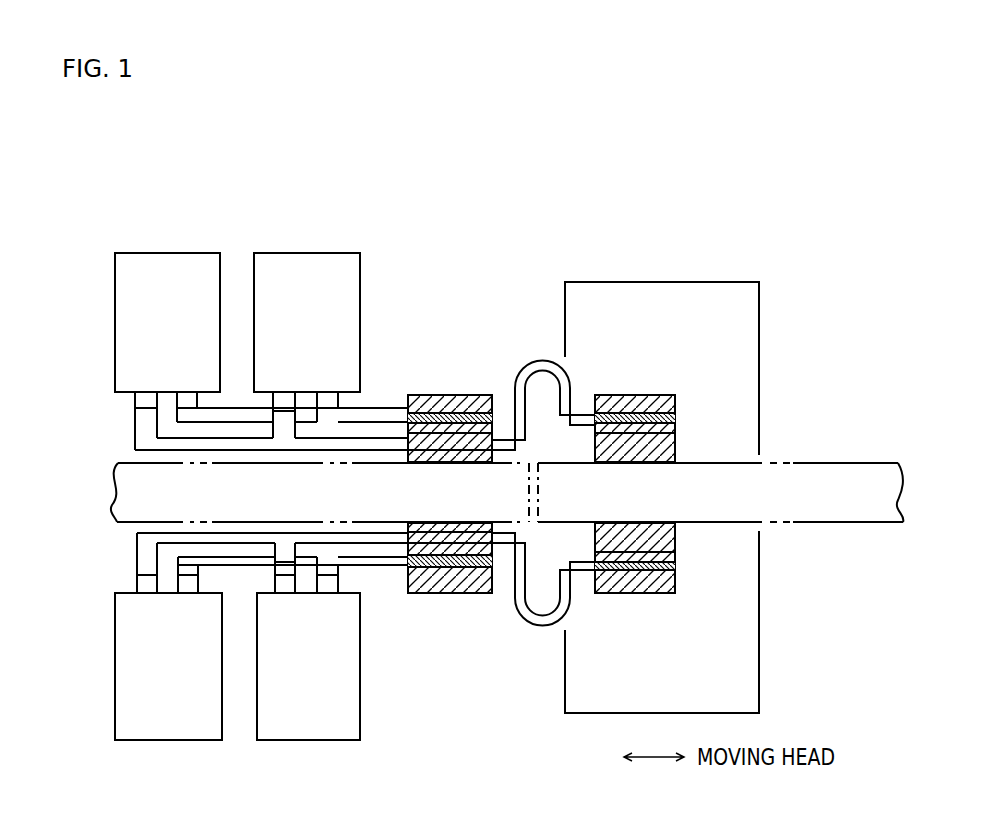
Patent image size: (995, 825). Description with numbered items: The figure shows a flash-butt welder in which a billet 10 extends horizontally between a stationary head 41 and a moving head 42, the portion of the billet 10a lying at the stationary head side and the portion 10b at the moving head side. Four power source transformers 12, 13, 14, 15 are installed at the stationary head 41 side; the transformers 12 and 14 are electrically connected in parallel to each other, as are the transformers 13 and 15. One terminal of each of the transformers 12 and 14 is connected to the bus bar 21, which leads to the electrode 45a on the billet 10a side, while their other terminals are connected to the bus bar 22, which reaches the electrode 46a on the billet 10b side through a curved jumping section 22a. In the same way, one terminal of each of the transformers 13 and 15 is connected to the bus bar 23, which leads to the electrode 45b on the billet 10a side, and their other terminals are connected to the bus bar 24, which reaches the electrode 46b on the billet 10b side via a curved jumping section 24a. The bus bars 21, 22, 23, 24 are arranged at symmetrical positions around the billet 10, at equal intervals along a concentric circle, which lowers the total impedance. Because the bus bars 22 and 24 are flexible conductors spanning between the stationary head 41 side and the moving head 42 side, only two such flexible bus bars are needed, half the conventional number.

The billet 10 is at (475, 548).
The billet on the stationary head side 10a is at (135, 498).
The billet on the moving head side 10b is at (829, 505).
The power source transformer 12 is at (118, 355).
The power source transformer 13 is at (115, 688).
The power source transformer 14 is at (353, 310).
The power source transformer 15 is at (355, 712).
The bus bar 21 is at (386, 408).
The bus bar 22 is at (135, 438).
The curved jumping section 22a is at (550, 362).
The bus bar 23 is at (377, 568).
The bus bar 24 is at (135, 557).
The curved jumping section 24a is at (547, 627).
The stationary head 41 is at (302, 243).
The moving head 42 is at (775, 372).
The electrode 45a is at (472, 395).
The electrode 45b is at (458, 593).
The electrode 46a is at (662, 395).
The electrode 46b is at (645, 593).